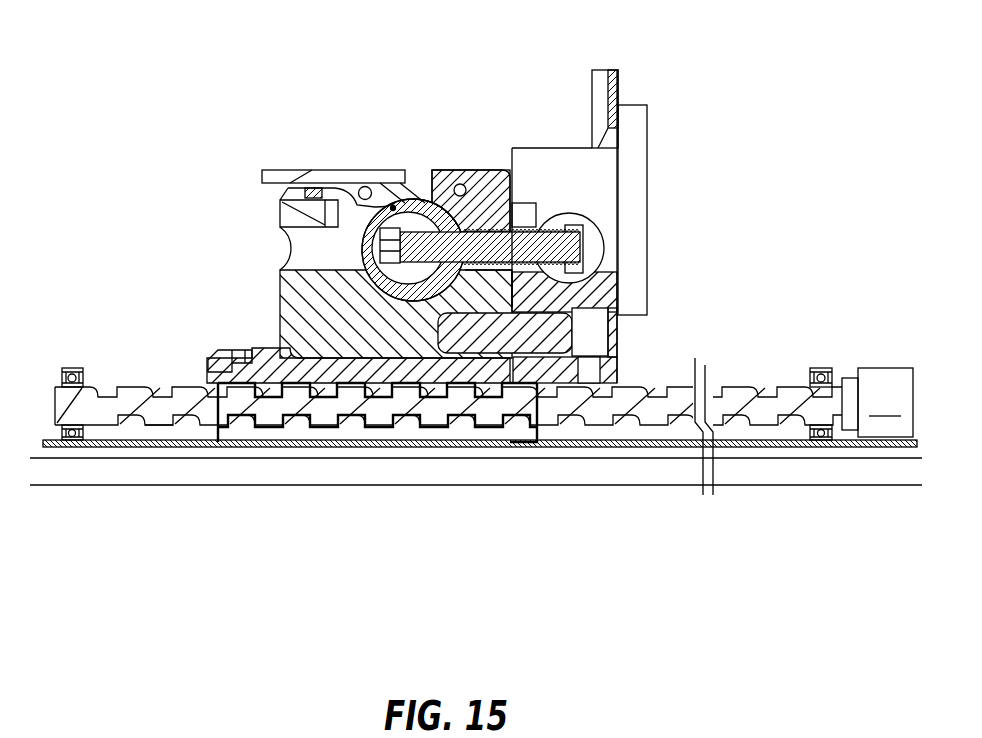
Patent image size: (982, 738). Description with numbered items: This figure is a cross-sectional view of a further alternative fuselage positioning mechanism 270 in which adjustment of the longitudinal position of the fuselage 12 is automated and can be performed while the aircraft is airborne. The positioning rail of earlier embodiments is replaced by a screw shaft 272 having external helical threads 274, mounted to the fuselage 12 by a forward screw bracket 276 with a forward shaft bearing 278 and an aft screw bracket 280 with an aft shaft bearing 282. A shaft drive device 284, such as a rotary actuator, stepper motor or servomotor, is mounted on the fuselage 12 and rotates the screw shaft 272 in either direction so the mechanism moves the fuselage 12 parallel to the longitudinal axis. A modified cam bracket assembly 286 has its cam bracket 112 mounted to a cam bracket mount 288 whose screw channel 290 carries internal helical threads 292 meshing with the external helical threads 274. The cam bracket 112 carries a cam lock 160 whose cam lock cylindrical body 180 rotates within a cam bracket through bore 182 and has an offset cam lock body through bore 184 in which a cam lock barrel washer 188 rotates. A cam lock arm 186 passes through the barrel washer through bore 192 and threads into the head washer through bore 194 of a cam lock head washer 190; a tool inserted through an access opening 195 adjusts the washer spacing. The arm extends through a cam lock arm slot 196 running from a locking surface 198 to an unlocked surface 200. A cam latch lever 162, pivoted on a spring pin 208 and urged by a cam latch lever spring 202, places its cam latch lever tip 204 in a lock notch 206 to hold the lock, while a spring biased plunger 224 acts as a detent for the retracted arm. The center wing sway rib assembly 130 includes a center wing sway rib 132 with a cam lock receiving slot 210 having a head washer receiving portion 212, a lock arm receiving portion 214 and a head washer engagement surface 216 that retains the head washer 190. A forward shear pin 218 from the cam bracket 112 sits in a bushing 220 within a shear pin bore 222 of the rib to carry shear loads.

The fuselage 12 is at (115, 447).
The cam bracket 112 is at (295, 343).
The center wing sway rib assembly 130 is at (643, 50).
The center wing sway rib 132 is at (600, 105).
The cam lock 160 is at (441, 176).
The cam latch lever 162 is at (313, 182).
The cam lock cylindrical body 180 is at (478, 231).
The cam bracket through bore 182 is at (362, 243).
The cam lock body through bore 184 is at (372, 249).
The cam lock arm 186 is at (524, 200).
The cam lock barrel washer 188 is at (413, 301).
The cam lock head washer 190 is at (558, 214).
The barrel washer through bore 192 is at (445, 205).
The head washer through bore 194 is at (586, 235).
The access opening 195 is at (289, 260).
The cam lock arm slot 196 is at (393, 285).
The locking surface 198 is at (603, 168).
The unlocked surface 200 is at (280, 213).
The cam latch lever spring 202 is at (305, 193).
The cam latch lever tip 204 is at (418, 190).
The lock notch 206 is at (392, 205).
The spring pin 208 is at (367, 186).
The cam lock receiving slot 210 is at (608, 272).
The head washer receiving portion 212 is at (575, 205).
The lock arm receiving portion 214 is at (525, 195).
The head washer engagement surface 216 is at (453, 177).
The forward shear pin 218 is at (560, 323).
The bushing 220 is at (593, 357).
The shear pin bore 222 is at (600, 335).
The spring biased plunger 224 is at (462, 184).
The fuselage positioning mechanism 270 is at (195, 108).
The screw shaft 272 is at (128, 400).
The external helical threads 274 is at (153, 426).
The forward screw bracket 276 is at (72, 367).
The forward shaft bearing 278 is at (62, 376).
The aft screw bracket 280 is at (823, 367).
The aft shaft bearing 282 is at (810, 378).
The shaft drive device 284 is at (885, 402).
The cam bracket assembly 286 is at (330, 110).
The cam bracket mount 288 is at (213, 368).
The screw channel 290 is at (218, 442).
The internal helical threads 292 is at (325, 400).